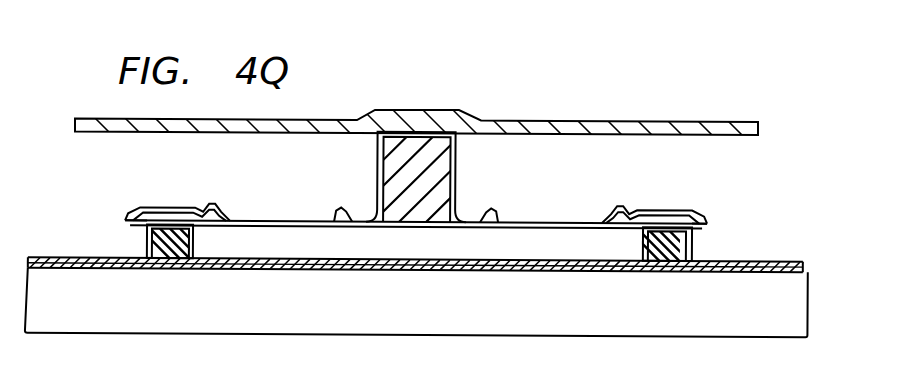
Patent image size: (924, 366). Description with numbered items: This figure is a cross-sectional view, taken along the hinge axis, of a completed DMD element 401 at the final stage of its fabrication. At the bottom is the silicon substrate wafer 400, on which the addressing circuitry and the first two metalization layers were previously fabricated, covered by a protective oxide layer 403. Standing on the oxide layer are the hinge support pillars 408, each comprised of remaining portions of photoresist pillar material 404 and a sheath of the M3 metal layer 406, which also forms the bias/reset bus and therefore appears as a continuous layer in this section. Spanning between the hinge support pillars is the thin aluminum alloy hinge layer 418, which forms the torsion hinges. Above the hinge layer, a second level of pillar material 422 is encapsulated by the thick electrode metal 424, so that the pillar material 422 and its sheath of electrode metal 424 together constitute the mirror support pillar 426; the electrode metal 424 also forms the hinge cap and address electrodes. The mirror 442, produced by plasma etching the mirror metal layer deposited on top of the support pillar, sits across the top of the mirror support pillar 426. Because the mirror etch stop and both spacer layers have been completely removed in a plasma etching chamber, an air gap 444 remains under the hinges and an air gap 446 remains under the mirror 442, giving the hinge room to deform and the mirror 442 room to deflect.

The substrate wafer 400 is at (437, 316).
The DMD element 401 is at (710, 84).
The protective oxide layer 403 is at (806, 271).
The pillar material 404 is at (165, 263).
The metal layer 406 is at (806, 267).
The hinge support pillar 408 is at (136, 244).
The hinge layer 418 is at (546, 222).
The pillar material 422 is at (437, 190).
The electrode metal 424 is at (185, 209).
The mirror support pillar 426 is at (362, 170).
The mirror 442 is at (654, 128).
The air gap 444 is at (470, 252).
The air gap 446 is at (592, 142).